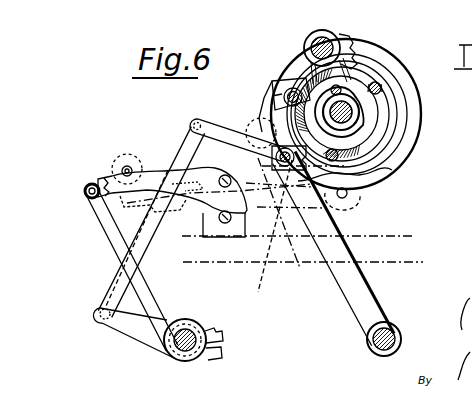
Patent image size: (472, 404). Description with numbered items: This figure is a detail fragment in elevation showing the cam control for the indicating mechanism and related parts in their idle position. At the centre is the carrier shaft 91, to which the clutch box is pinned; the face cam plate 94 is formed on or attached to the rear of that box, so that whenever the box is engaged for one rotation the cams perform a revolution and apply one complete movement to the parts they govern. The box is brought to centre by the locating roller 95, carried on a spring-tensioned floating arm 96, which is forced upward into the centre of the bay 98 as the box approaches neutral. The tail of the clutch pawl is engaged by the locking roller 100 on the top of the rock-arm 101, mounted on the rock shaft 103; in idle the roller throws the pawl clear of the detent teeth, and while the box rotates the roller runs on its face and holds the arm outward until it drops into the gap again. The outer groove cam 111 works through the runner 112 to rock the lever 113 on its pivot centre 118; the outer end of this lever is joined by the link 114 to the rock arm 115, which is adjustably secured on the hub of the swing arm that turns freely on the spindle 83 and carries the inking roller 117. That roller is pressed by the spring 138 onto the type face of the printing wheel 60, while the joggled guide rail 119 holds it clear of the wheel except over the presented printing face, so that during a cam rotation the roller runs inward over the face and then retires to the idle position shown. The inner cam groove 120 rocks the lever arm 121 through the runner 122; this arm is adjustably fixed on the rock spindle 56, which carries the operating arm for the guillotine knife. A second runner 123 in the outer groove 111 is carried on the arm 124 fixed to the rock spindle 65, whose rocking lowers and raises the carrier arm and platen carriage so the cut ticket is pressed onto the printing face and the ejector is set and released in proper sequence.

The rock spindle 56 is at (268, 95).
The printing wheel 60 is at (127, 203).
The rock spindle 65 is at (316, 46).
The spindle 83 is at (203, 330).
The carrier shaft 91 is at (353, 110).
The face cam plate 94 is at (378, 68).
The locating roller 95 is at (360, 203).
The floating arm 96 is at (299, 266).
The bay 98 is at (362, 181).
The locking roller 100 is at (263, 122).
The rock-arm 101 is at (368, 289).
The rock shaft 103 is at (403, 331).
The outer groove cam 111 is at (396, 135).
The runner 112 is at (345, 160).
The lever 113 is at (232, 127).
The link 114 is at (120, 277).
The rock arm 115 is at (122, 235).
The inking roller 117 is at (118, 157).
The pivot centre 118 is at (269, 237).
The guide rail 119 is at (182, 173).
The inner cam groove 120 is at (376, 117).
The lever arm 121 is at (306, 86).
The runner 122 is at (338, 84).
The runner 123 is at (380, 86).
The arm 124 is at (342, 40).
The spring 138 is at (88, 182).